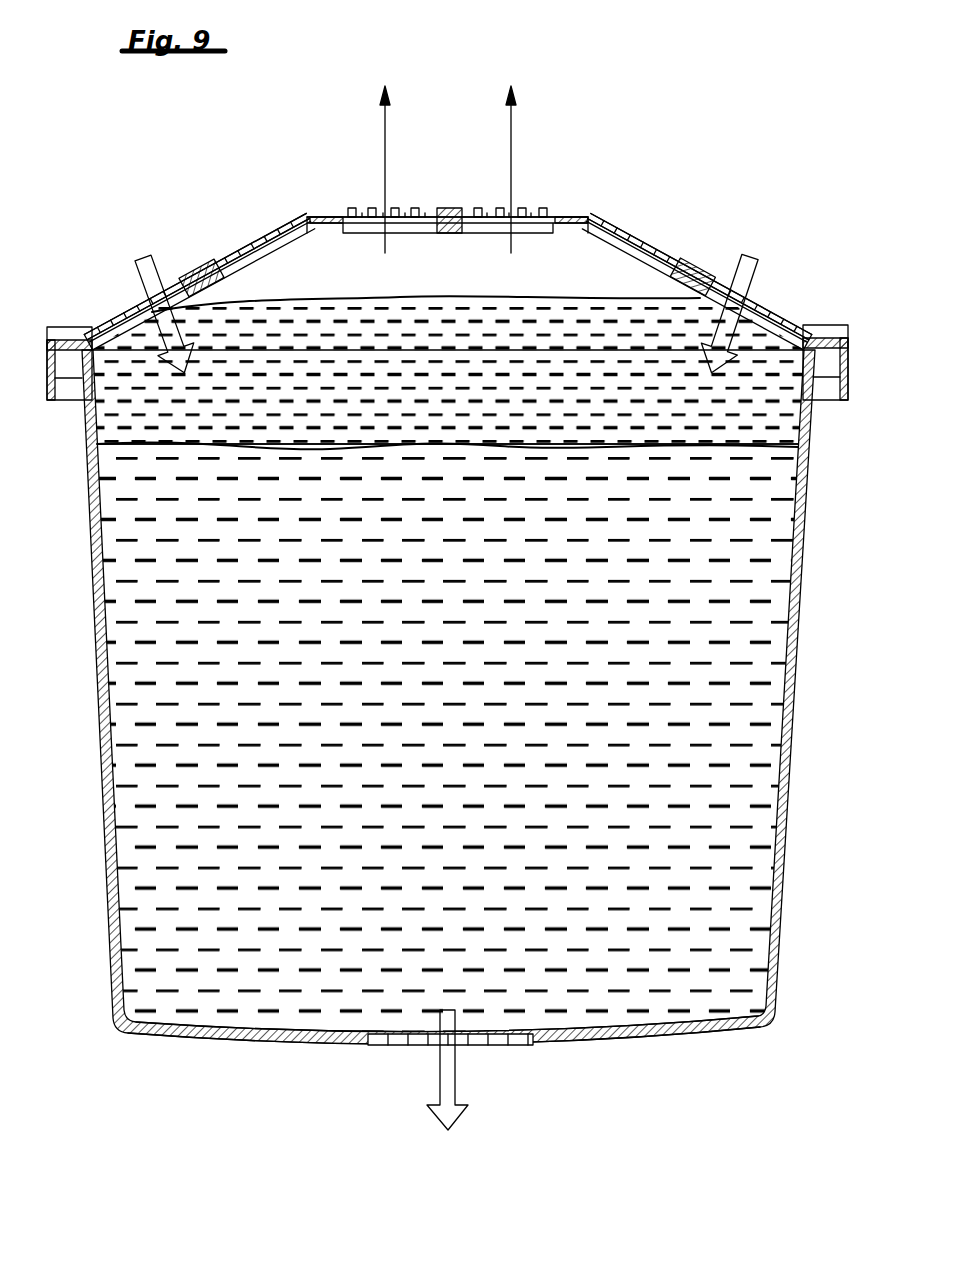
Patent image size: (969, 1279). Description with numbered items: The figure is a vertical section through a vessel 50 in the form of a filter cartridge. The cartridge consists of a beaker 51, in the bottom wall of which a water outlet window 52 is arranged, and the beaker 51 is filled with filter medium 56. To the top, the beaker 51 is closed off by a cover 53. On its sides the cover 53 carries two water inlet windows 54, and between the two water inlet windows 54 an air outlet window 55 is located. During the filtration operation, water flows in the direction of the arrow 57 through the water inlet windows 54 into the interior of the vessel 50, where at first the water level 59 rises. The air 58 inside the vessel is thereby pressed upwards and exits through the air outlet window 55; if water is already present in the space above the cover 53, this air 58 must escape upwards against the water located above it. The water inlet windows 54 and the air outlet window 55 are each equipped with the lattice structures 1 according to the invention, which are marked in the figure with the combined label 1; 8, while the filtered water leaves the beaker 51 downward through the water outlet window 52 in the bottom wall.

The vessel 50 is at (227, 1047).
The beaker 51 is at (684, 1032).
The water outlet window 52 is at (388, 1040).
The cover 53 is at (448, 253).
The water inlet windows 54 is at (243, 243).
The air outlet window 55 is at (531, 197).
The filter medium 56 is at (623, 965).
The arrow 57 is at (143, 258).
The air 58 is at (385, 130).
The water level 59 is at (428, 298).
The lattice structures 1 is at (428, 248).
The layer 8 is at (140, 308).